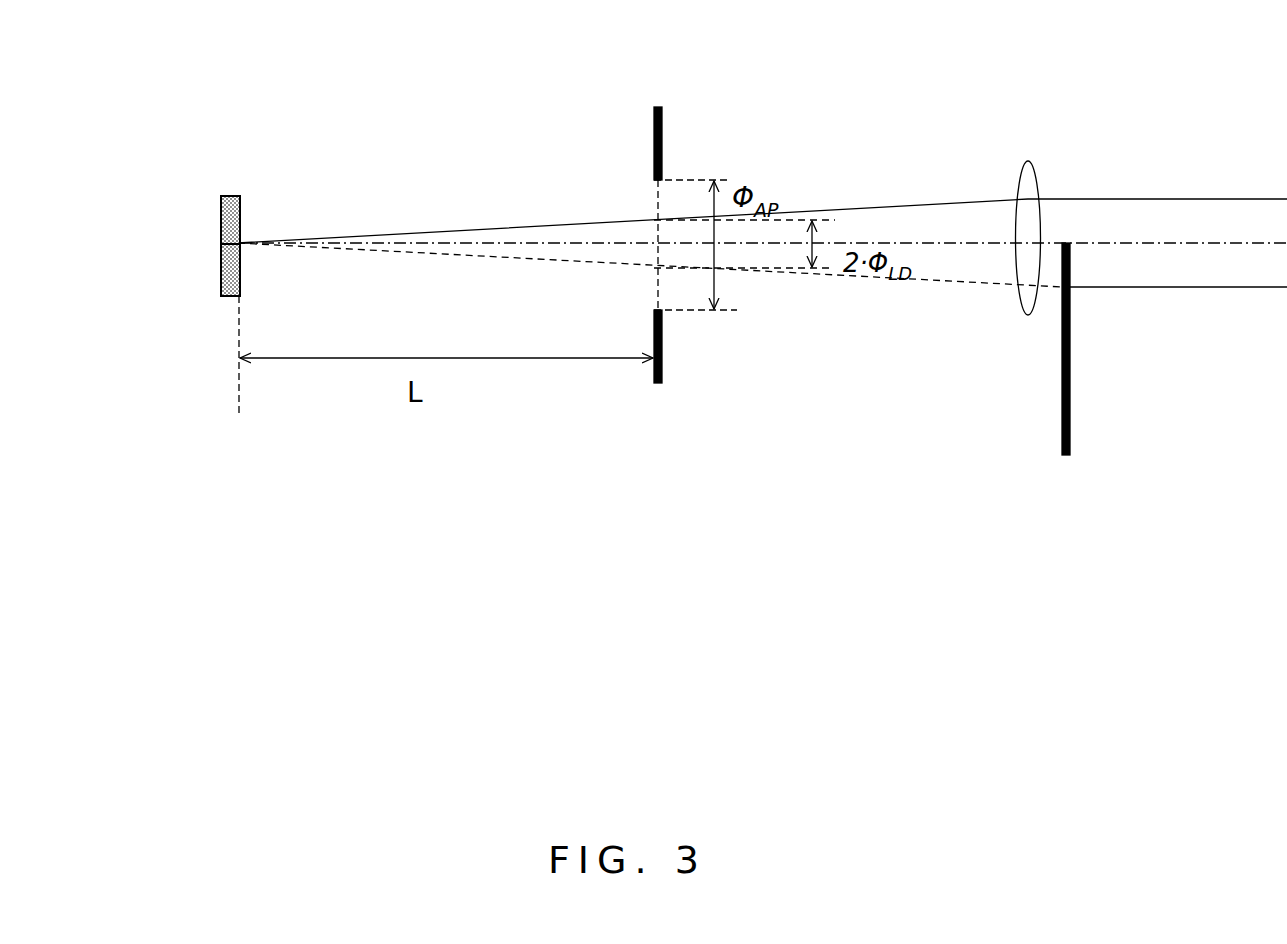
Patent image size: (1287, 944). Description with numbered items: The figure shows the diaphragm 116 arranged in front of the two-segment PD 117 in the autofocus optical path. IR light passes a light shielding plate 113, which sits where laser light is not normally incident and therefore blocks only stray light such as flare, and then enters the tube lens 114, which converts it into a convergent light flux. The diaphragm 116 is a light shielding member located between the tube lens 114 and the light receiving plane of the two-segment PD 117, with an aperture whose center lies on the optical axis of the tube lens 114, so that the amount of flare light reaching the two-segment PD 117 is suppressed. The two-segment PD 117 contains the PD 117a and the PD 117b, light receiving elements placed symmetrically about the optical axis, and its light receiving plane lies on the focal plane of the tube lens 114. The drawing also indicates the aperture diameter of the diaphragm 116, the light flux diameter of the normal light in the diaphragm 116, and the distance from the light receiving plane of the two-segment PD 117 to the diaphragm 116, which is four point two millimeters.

The two-segment PD 117 is at (195, 195).
The PD 117a is at (232, 218).
The PD 117b is at (232, 270).
The diaphragm 116 is at (656, 140).
The tube lens 114 is at (1021, 160).
The light shielding plate 113 is at (1063, 368).